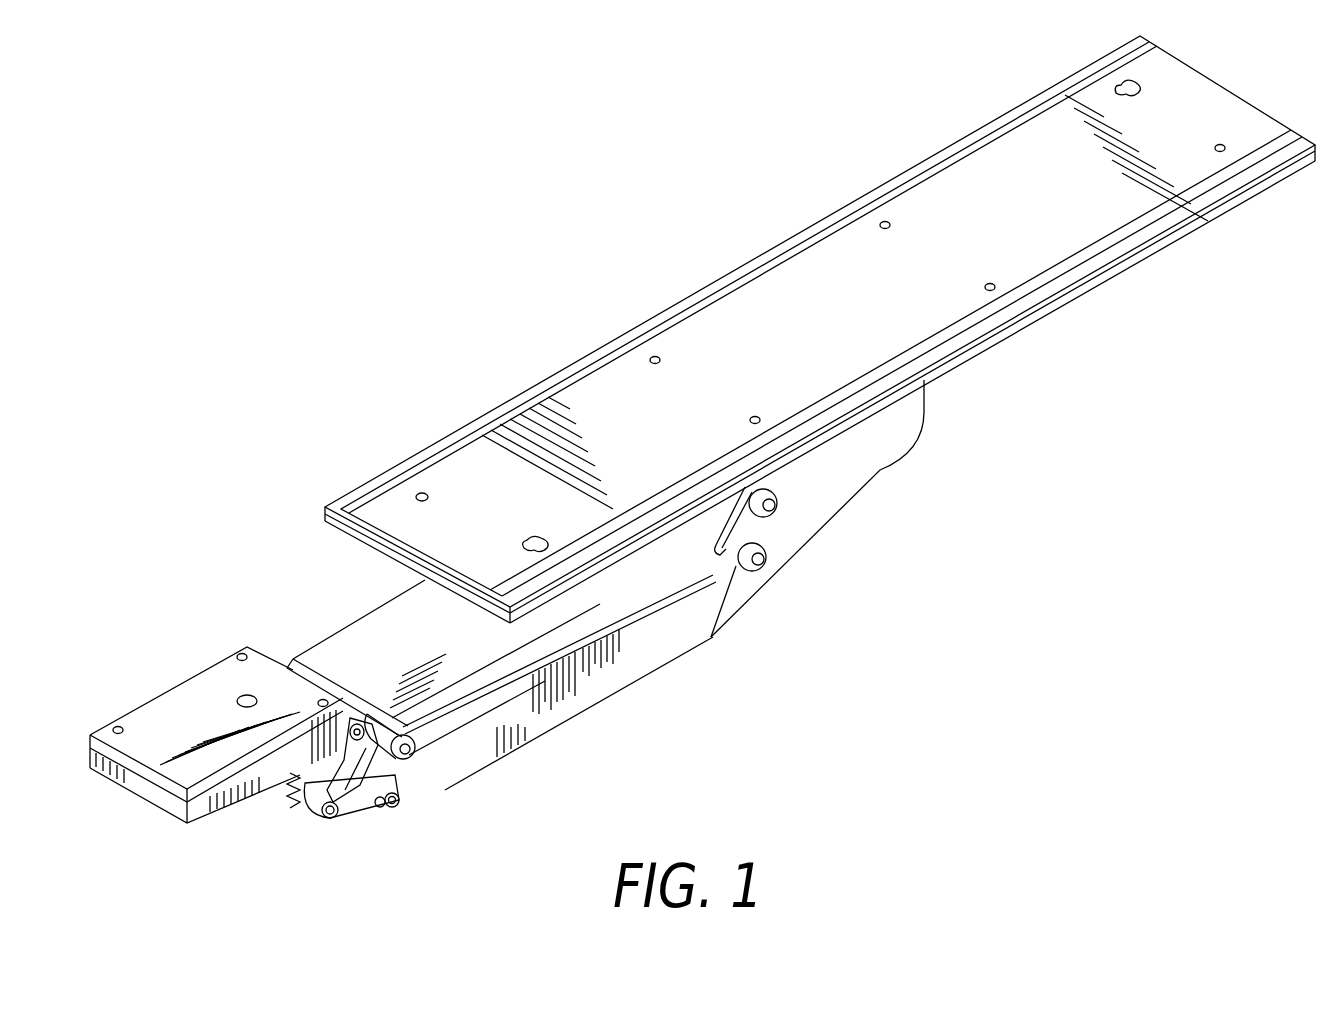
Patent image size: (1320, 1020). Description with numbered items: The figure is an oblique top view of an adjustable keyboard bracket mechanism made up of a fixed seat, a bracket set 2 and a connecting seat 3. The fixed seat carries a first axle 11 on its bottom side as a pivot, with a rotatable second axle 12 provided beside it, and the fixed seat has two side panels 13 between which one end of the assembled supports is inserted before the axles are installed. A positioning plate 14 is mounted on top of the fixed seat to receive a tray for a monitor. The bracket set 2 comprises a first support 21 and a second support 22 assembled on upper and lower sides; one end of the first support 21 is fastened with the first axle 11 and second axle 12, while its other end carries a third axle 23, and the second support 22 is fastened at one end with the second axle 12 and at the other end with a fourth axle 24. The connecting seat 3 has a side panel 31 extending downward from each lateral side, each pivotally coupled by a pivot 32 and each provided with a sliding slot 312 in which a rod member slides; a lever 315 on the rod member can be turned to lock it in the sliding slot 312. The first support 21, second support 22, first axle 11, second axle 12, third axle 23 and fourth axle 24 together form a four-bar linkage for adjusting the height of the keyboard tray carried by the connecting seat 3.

The bracket set 2 is at (520, 682).
The connecting seat 3 is at (200, 693).
The first axle 11 is at (777, 505).
The second axle 12 is at (765, 562).
The side panels 13 is at (887, 430).
The positioning plate 14 is at (738, 318).
The first support 21 is at (600, 583).
The second support 22 is at (597, 682).
The third axle 23 is at (413, 752).
The fourth axle 24 is at (396, 805).
The side panel 31 is at (245, 783).
The pivot 32 is at (386, 757).
The sliding slot 312 is at (295, 790).
The lever 315 is at (367, 797).